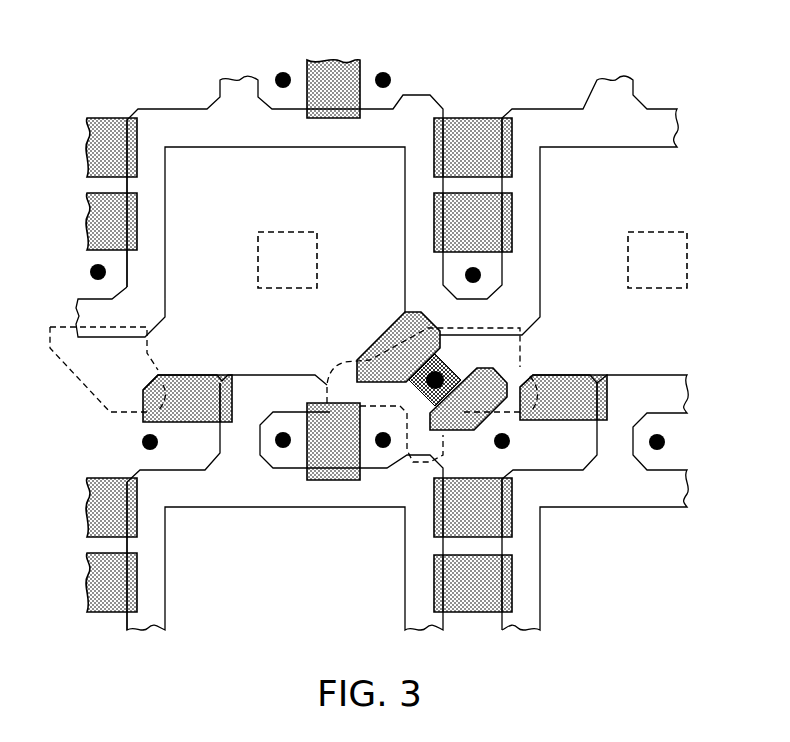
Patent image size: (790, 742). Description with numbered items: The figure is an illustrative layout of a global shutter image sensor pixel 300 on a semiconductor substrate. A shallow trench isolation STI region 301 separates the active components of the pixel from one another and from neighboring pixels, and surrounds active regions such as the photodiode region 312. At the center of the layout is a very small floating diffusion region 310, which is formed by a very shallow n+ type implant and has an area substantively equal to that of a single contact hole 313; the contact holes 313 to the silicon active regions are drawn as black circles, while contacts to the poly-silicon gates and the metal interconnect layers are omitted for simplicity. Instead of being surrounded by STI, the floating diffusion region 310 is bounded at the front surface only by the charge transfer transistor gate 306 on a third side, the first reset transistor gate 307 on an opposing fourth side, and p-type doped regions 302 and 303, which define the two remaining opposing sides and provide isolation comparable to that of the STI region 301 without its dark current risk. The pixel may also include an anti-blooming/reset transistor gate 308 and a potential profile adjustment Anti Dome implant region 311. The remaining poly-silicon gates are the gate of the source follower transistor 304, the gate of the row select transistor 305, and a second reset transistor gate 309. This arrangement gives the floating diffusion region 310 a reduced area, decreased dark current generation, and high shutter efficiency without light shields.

The pixel 300 is at (122, 63).
The STI region 301 is at (530, 113).
The p-type doped region 302 is at (85, 386).
The p-type doped region 303 is at (398, 403).
The source follower transistor gate 304 is at (513, 162).
The row select transistor gate 305 is at (513, 240).
The charge transfer transistor gate 306 is at (380, 340).
The first reset transistor gate 307 is at (516, 368).
The anti-blooming/reset transistor gate 308 is at (190, 375).
The second reset transistor gate 309 is at (335, 480).
The floating diffusion region 310 is at (440, 370).
The Anti Dome implant region 311 is at (318, 256).
The photodiode region 312 is at (237, 206).
The contact hole 313 is at (378, 68).